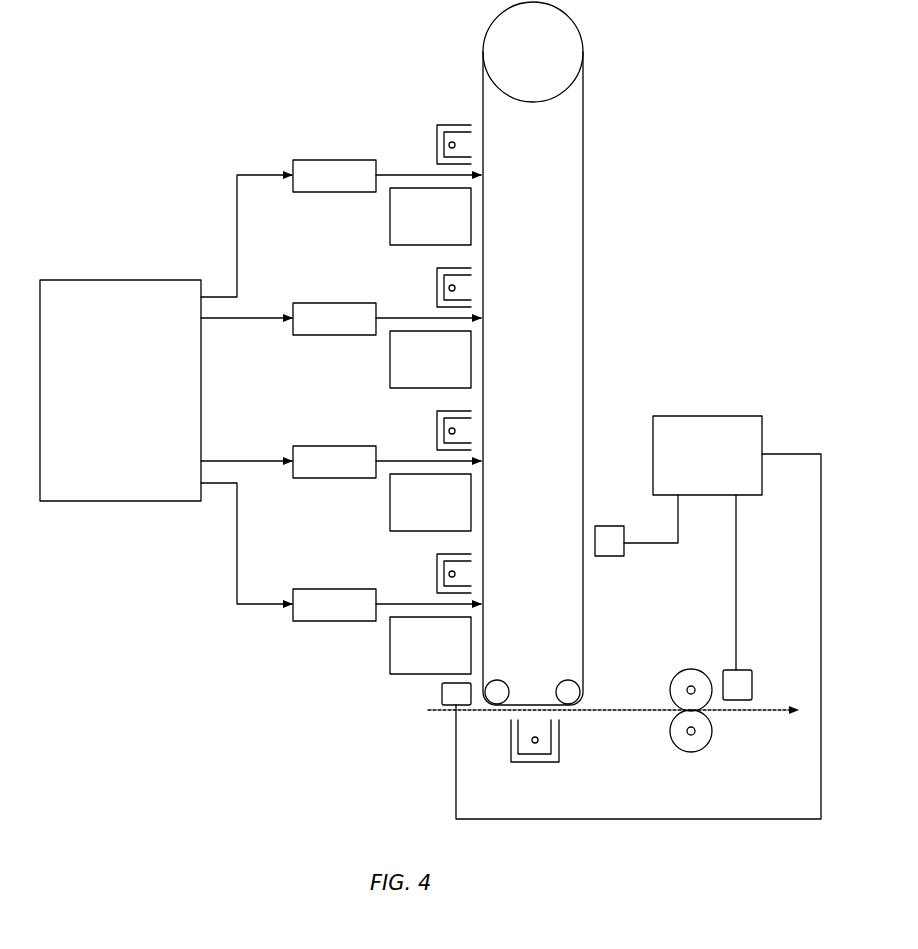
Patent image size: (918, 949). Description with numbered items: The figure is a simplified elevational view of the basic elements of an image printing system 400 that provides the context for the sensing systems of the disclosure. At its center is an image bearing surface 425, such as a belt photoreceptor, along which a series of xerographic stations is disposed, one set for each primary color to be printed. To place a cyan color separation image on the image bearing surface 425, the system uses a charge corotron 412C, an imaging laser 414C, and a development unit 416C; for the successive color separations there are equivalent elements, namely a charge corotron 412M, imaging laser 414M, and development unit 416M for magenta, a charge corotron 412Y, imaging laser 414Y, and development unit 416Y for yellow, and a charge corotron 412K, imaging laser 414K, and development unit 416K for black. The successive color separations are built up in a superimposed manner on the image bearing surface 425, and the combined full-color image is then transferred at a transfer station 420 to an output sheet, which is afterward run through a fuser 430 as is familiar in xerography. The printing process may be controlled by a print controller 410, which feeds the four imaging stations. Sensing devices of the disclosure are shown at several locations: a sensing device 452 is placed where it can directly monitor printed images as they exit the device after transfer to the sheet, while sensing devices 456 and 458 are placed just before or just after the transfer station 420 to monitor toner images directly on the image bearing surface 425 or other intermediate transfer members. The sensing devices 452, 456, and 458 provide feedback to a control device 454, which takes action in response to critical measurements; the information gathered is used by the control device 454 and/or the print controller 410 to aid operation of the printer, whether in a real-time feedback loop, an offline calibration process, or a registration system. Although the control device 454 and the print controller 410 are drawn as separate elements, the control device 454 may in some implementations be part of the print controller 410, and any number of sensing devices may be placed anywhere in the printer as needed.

The printing system 400 is at (192, 100).
The print controller 410 is at (108, 280).
The imaging laser 414C is at (300, 160).
The imaging laser 414M is at (300, 303).
The imaging laser 414Y is at (300, 446).
The imaging laser 414K is at (300, 589).
The charge corotron 412C is at (436, 152).
The charge corotron 412M is at (436, 295).
The charge corotron 412Y is at (436, 438).
The charge corotron 412K is at (436, 581).
The development unit 416C is at (390, 237).
The development unit 416M is at (390, 380).
The development unit 416Y is at (390, 523).
The development unit 416K is at (390, 666).
The image bearing surface 425 is at (583, 282).
The transfer station 420 is at (580, 733).
The fuser 430 is at (677, 656).
The sensing device 452 is at (742, 670).
The control device 454 is at (697, 416).
The sensing device 456 is at (610, 557).
The sensing device 458 is at (442, 692).